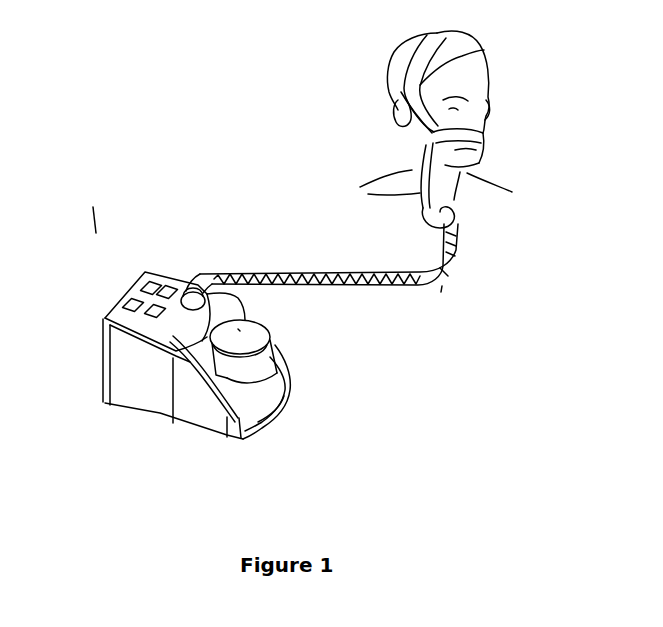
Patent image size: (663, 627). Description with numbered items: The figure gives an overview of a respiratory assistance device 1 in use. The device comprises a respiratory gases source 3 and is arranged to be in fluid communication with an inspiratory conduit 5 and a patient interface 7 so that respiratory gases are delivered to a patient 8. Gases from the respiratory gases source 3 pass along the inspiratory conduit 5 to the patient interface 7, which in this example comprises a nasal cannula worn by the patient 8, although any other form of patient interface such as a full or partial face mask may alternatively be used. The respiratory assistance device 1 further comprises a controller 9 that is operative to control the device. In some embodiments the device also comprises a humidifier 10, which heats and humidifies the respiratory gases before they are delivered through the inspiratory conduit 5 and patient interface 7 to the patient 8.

The respiratory assistance device 1 is at (103, 227).
The respiratory gases source 3 is at (113, 374).
The inspiratory conduit 5 is at (368, 284).
The patient interface 7 is at (483, 133).
The patient 8 is at (432, 137).
The controller 9 is at (157, 292).
The humidifier 10 is at (272, 339).